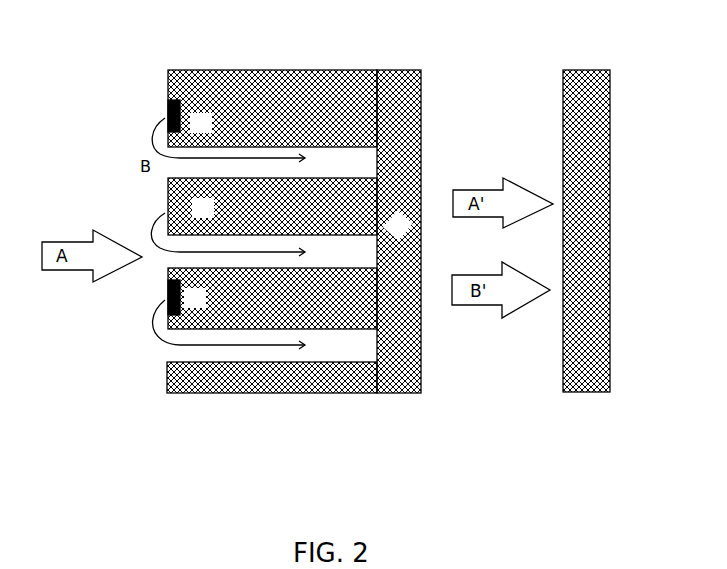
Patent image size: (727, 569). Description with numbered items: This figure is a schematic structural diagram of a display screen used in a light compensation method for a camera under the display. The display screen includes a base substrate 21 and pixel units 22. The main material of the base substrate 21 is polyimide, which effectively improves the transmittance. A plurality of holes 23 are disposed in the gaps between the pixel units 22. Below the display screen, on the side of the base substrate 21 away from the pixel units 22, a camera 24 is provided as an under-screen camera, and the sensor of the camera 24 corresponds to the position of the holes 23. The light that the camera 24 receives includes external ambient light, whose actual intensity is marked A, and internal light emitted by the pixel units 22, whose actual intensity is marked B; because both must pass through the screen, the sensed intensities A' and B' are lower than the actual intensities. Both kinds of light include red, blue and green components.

The base substrate 21 is at (393, 363).
The pixel units 22 is at (167, 100).
The holes 23 is at (177, 353).
The camera 24 is at (590, 373).